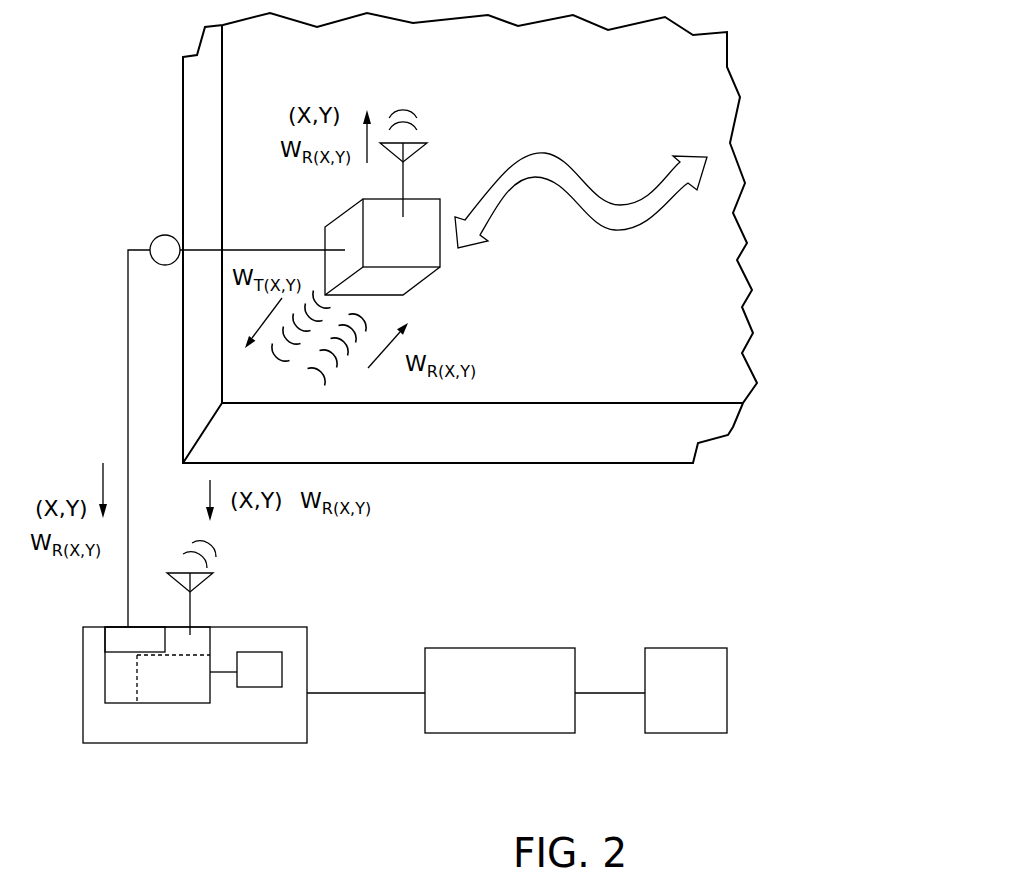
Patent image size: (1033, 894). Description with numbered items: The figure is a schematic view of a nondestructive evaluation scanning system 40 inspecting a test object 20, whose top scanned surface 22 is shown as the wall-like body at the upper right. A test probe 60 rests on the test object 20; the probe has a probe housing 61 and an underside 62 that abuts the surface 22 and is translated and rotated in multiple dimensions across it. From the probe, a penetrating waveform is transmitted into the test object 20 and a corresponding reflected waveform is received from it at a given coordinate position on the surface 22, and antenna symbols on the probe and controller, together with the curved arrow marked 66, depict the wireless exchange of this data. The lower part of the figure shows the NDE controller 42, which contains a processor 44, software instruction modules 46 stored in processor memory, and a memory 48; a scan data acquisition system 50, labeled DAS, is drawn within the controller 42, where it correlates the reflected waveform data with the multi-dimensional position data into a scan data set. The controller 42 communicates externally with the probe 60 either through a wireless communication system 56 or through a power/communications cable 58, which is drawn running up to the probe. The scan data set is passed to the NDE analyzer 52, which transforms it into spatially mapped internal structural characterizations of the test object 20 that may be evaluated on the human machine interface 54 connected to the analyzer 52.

The test object 20 is at (762, 282).
The top scanned surface 22 is at (673, 336).
The NDE scanning system 40 is at (455, 568).
The NDE controller 42 is at (225, 674).
The processor 44 is at (120, 692).
The software instruction modules 46 is at (182, 688).
The memory 48 is at (273, 673).
The scan data acquisition system 50 is at (145, 625).
The NDE analyzer 52 is at (490, 655).
The human machine interface 54 is at (672, 655).
The wireless communication system 56 is at (190, 608).
The power/communications cable 58 is at (128, 330).
The test probe 60 is at (395, 192).
The probe housing 61 is at (442, 253).
The underside 62 is at (318, 240).
The transmitting antenna 66 is at (403, 183).